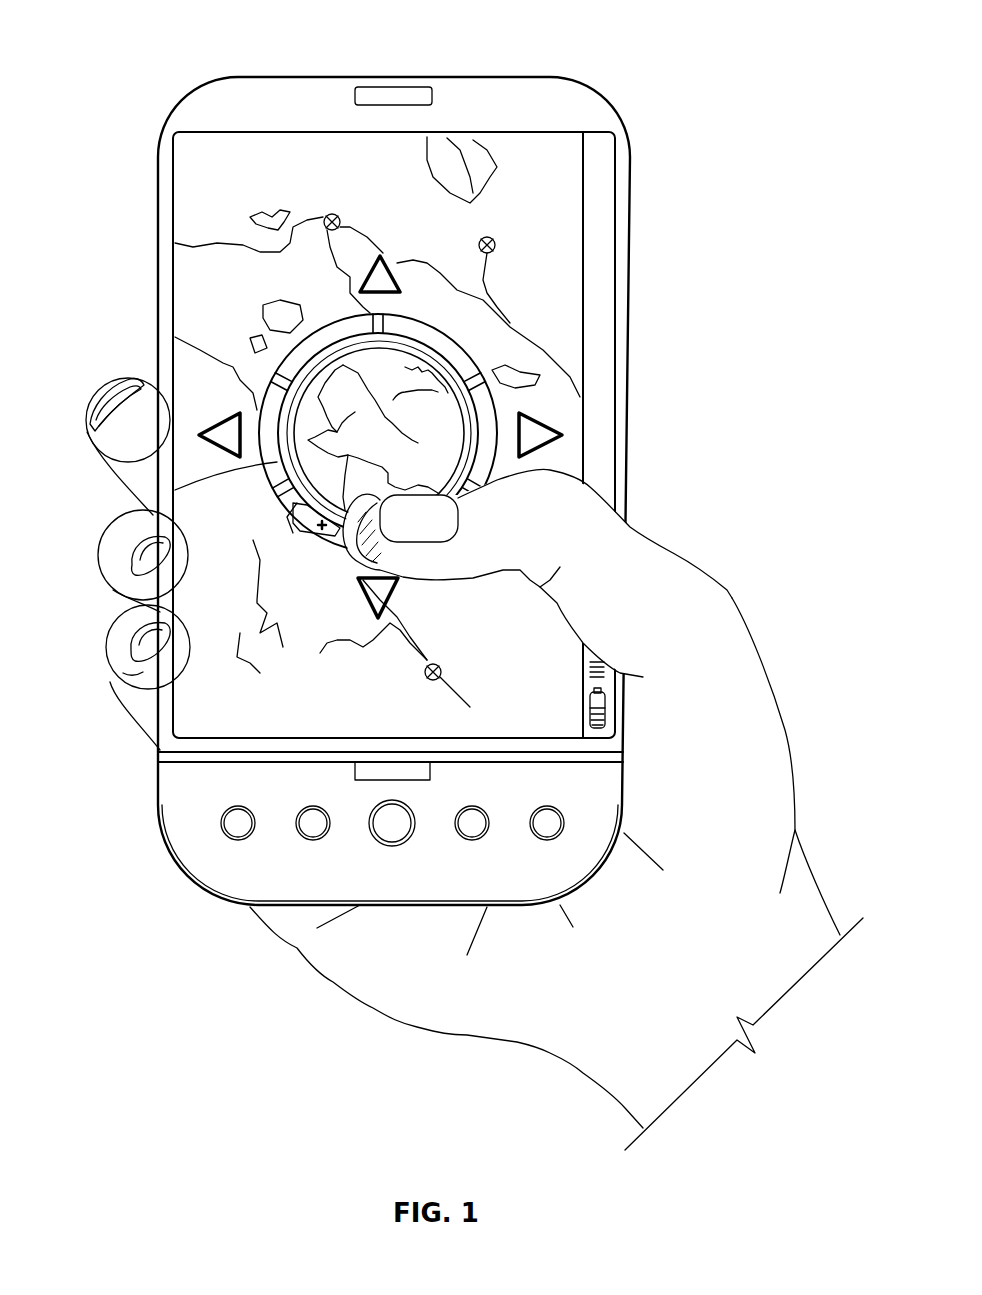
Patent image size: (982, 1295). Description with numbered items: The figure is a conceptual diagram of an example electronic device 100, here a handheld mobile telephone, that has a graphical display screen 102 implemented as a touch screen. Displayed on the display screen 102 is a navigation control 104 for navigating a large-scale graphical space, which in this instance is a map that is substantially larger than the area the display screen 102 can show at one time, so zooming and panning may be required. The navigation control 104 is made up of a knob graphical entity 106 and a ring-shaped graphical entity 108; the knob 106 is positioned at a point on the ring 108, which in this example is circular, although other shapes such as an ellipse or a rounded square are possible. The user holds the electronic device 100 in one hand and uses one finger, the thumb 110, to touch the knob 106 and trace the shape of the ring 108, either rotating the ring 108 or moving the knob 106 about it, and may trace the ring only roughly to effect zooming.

The electronic device 100 is at (537, 76).
The display screen 102 is at (558, 283).
The navigation control 104 is at (497, 411).
The knob graphical entity 106 is at (342, 547).
The ring-shaped graphical entity 108 is at (157, 516).
The thumb 110 is at (727, 624).